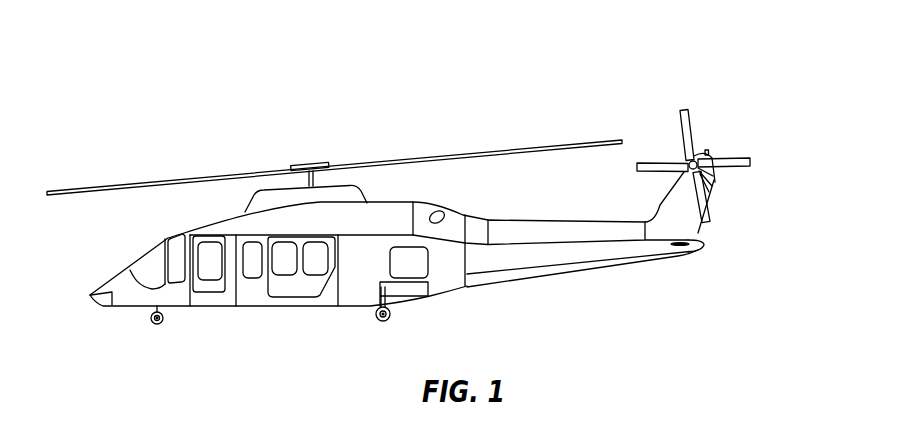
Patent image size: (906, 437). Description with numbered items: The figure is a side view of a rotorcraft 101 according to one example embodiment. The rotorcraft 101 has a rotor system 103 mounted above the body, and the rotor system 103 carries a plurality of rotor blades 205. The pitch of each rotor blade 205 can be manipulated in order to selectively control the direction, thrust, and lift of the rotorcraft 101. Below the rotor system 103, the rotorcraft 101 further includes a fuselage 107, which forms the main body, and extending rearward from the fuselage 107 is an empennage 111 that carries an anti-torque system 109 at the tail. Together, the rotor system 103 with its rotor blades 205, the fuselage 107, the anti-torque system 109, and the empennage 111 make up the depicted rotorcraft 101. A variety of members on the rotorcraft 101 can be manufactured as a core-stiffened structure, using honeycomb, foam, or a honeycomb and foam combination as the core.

The rotorcraft 101 is at (420, 189).
The rotor system 103 is at (334, 139).
The rotor blade 205 is at (510, 148).
The fuselage 107 is at (243, 307).
The anti-torque system 109 is at (713, 145).
The empennage 111 is at (573, 274).